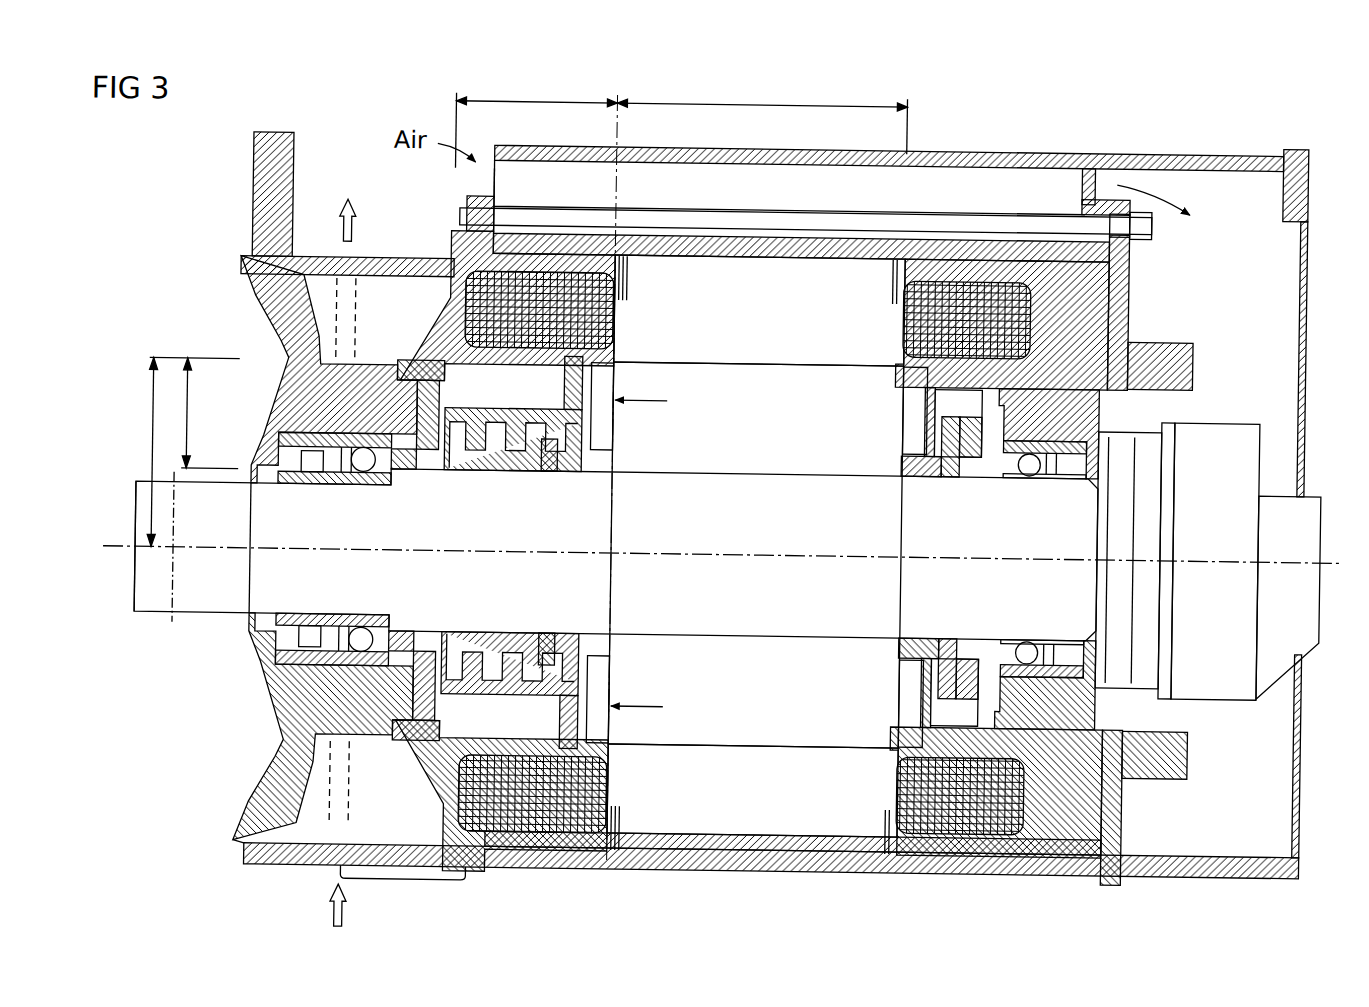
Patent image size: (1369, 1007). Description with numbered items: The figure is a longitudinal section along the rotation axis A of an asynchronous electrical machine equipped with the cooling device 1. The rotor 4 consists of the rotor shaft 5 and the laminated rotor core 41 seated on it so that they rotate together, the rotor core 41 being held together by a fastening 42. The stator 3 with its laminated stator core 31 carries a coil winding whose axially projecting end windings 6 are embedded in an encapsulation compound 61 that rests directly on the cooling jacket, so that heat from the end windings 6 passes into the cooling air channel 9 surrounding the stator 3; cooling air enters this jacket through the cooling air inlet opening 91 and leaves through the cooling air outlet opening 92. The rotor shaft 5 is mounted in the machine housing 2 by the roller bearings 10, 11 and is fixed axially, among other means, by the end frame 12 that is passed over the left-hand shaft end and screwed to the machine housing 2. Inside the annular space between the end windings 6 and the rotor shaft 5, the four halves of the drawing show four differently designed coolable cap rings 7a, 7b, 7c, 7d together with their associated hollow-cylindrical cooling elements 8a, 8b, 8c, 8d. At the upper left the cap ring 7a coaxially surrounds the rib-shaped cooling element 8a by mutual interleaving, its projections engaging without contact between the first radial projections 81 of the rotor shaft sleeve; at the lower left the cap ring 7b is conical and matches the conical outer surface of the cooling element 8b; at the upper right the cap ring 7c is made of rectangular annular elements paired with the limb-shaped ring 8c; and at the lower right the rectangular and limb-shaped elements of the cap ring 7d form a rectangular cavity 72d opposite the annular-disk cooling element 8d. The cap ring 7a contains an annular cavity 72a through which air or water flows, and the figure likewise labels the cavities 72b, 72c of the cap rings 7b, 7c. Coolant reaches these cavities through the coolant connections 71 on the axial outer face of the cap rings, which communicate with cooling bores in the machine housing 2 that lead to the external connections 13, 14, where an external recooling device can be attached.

The cooling device 1 is at (466, 480).
The machine housing 2 is at (402, 263).
The stator 3 is at (655, 265).
The stator core 31 is at (775, 283).
The rotor 4 is at (768, 475).
The rotor core 41 is at (768, 372).
The fastening 42 is at (600, 410).
The rotor shaft 5 is at (207, 620).
The end windings 6 is at (612, 322).
The encapsulation compound 61 is at (450, 318).
The coolant connections 71 is at (398, 472).
The coolable cap ring 7a is at (428, 472).
The coolable cap ring 7b is at (420, 636).
The coolable cap ring 7c is at (968, 472).
The coolable cap ring 7d is at (972, 634).
The annular cavity 72a is at (455, 390).
The fan 72b is at (418, 742).
The fan 72c is at (950, 400).
The cavity 72d is at (955, 700).
The hollow-cylindrical cooling element 8a is at (514, 472).
The hollow-cylindrical cooling element 8b is at (548, 634).
The hollow-cylindrical cooling element 8c is at (910, 472).
The hollow-cylindrical cooling element 8d is at (922, 634).
The first axially separated radial projections 81 is at (552, 472).
The cooling air channel 9 is at (758, 165).
The cooling air inlet opening 91 is at (492, 178).
The cooling air outlet opening 92 is at (1100, 172).
The roller bearing 10 is at (362, 490).
The roller bearing 11 is at (1030, 474).
The end frame 12 is at (262, 452).
The external connection 13 is at (343, 872).
The external connection 14 is at (348, 263).